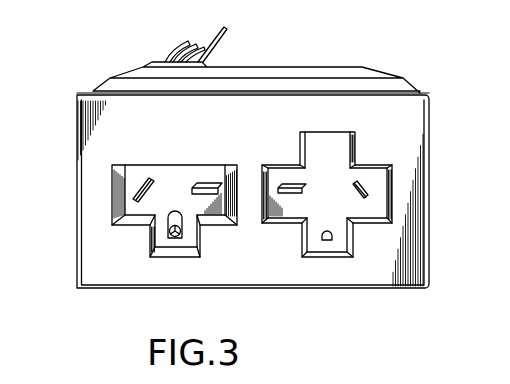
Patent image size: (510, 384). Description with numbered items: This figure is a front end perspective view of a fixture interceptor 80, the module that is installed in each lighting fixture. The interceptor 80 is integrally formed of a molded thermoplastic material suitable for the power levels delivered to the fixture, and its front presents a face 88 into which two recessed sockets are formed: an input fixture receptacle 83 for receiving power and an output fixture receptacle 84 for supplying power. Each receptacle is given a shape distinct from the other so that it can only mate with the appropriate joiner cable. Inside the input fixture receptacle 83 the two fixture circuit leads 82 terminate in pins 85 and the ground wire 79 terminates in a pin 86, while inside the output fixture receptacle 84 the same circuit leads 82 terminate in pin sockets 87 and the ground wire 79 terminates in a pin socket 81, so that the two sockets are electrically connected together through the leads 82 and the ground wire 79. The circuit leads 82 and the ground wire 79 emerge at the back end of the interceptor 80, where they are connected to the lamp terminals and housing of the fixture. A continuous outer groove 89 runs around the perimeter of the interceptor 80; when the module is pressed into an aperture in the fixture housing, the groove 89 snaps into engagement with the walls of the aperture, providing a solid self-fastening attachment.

The ground wire 79 is at (171, 52).
The fixture interceptor 80 is at (430, 123).
The pin socket 81 is at (327, 240).
The fixture circuit leads 82 is at (226, 25).
The input fixture receptacle 83 is at (137, 163).
The output fixture receptacle 84 is at (313, 245).
The pins 85 is at (195, 183).
The pin 86 is at (175, 240).
The pin sockets 87 is at (362, 181).
The face 88 is at (107, 260).
The outer groove 89 is at (93, 91).